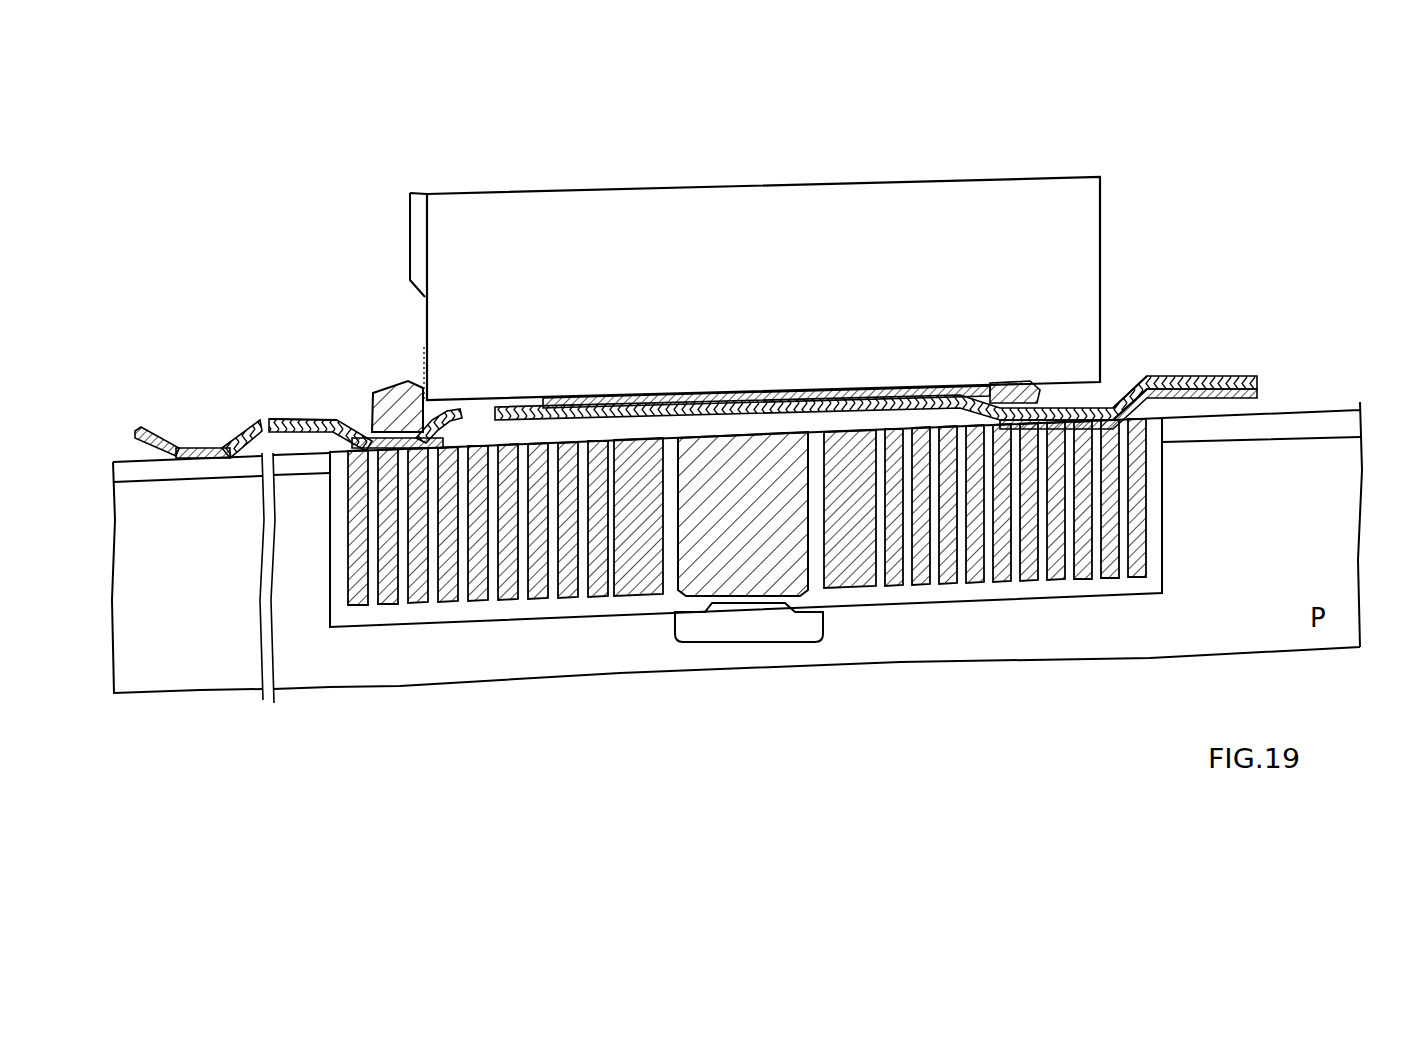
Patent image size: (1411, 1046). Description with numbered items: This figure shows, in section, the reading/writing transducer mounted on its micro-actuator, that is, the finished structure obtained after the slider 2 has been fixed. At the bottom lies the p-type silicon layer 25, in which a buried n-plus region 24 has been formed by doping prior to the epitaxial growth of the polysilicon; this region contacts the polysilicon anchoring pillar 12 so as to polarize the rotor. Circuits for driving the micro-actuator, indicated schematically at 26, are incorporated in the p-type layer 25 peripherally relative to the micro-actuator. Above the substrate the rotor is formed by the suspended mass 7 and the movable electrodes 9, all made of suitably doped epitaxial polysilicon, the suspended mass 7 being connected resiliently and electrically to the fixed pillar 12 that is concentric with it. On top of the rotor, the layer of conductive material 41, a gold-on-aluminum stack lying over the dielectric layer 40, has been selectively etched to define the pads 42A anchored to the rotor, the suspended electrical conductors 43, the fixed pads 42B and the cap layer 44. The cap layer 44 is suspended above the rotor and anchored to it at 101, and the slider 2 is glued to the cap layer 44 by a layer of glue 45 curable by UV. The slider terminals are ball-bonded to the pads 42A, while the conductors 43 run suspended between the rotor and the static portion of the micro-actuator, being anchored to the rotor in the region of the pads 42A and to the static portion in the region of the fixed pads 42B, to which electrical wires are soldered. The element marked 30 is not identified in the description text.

The slider 2 is at (986, 294).
The suspended mass 7 is at (643, 578).
The movable electrodes 9 is at (525, 600).
The anchoring pillar 12 is at (738, 463).
The buried N+ region 24 is at (803, 632).
The p-type silicon layer 25 is at (192, 675).
The circuits for driving the micro-actuator 26 is at (300, 470).
The semiconductor substrate 30 is at (1360, 532).
The dielectric layer 40 is at (232, 448).
The layer of conductive material 41 is at (322, 423).
The pads anchored to the rotor 42A is at (364, 434).
The fixed pads 42B is at (188, 450).
The suspended electrical conductors 43 is at (283, 414).
The cap layer 44 is at (598, 395).
The layer of glue 45 is at (990, 383).
The anchoring point of the cap layer 101 is at (1085, 405).